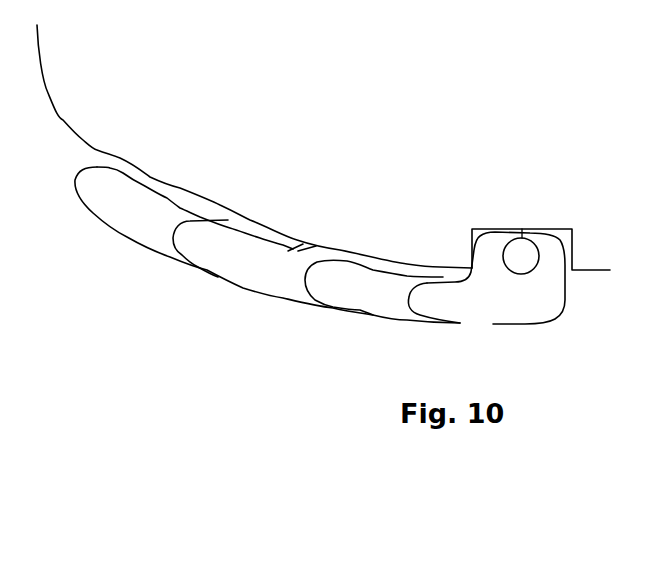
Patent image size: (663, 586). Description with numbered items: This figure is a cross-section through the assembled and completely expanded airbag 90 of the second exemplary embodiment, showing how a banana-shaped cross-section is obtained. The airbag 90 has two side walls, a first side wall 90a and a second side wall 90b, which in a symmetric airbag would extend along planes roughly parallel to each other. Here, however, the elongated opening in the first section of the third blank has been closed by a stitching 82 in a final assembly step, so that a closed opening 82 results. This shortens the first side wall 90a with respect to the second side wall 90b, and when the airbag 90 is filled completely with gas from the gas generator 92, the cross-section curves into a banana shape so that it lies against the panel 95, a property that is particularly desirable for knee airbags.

The airbag 90 is at (337, 320).
The first side wall 90a is at (253, 228).
The second side wall 90b is at (248, 287).
The stitching (closed opening) 82 is at (310, 245).
The gas generator 92 is at (528, 255).
The panel 95 is at (240, 168).